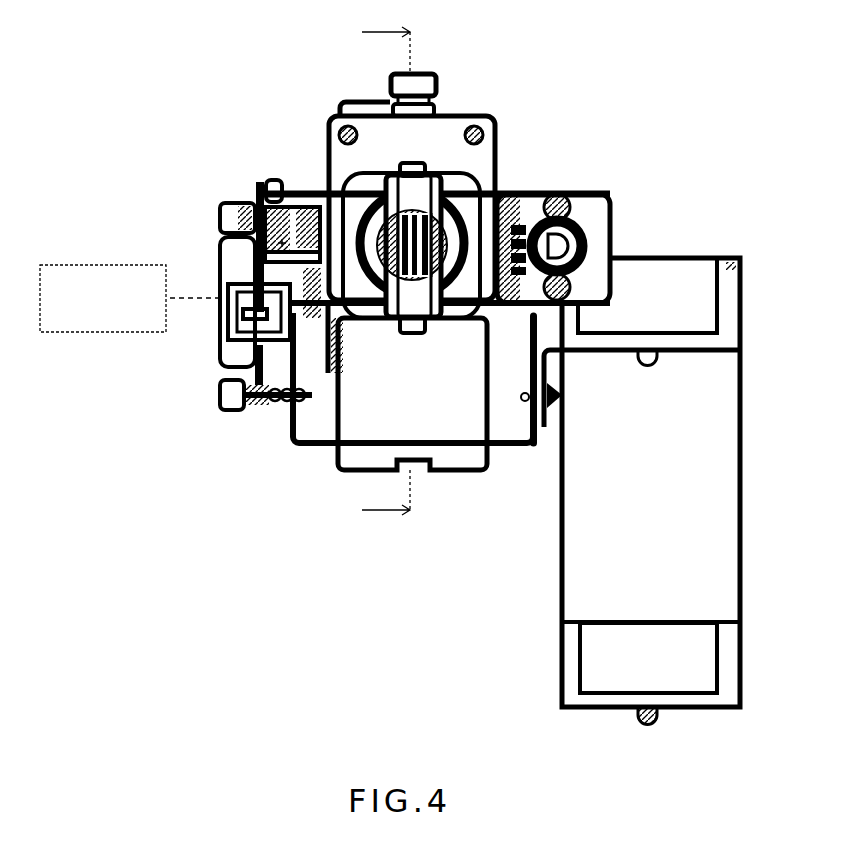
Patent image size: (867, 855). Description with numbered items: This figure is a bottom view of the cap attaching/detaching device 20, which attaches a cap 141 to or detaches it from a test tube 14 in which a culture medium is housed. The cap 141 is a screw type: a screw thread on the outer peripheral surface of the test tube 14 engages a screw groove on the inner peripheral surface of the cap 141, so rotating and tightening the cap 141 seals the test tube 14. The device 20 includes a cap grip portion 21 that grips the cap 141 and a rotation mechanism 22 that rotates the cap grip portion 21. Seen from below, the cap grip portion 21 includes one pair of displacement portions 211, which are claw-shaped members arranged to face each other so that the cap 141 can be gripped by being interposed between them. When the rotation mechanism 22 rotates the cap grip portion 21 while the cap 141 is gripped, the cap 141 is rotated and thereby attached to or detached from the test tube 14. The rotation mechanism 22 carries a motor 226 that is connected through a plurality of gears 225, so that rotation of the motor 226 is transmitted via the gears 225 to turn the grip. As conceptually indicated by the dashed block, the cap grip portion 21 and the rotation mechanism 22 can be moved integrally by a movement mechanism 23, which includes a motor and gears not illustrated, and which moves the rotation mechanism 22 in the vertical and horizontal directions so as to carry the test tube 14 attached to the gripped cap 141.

The cap attaching/detaching device 20 is at (658, 111).
The cap grip portion 21 is at (393, 168).
The displacement portions 211 is at (433, 165).
The test tube 14 is at (470, 240).
The cap 141 is at (475, 208).
The rotation mechanism 22 is at (611, 200).
The gears 225 is at (318, 190).
The motor 226 is at (612, 288).
The movement mechanism 23 is at (99, 262).